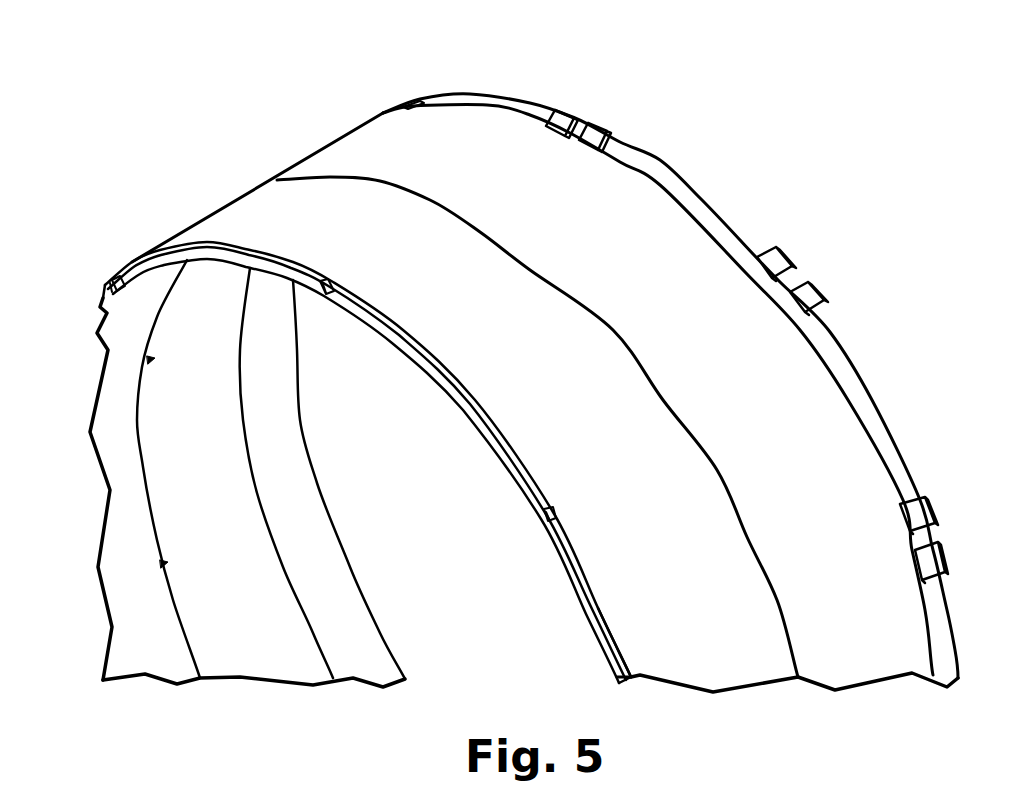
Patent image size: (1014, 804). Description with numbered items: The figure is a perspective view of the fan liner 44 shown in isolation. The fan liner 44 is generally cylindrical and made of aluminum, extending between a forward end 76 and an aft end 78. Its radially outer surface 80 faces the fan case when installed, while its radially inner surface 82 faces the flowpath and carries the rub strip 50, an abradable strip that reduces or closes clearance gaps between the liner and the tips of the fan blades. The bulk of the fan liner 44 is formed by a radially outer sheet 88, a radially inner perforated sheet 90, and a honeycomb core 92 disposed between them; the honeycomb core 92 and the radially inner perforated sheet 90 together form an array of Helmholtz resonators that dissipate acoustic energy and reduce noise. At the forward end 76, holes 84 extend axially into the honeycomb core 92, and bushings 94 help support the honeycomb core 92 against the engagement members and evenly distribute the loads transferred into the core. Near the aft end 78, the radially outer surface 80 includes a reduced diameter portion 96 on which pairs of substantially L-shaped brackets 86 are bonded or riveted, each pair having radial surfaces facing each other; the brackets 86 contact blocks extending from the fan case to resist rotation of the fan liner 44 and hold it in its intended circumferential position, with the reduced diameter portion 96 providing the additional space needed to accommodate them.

The fan liner 44 is at (513, 361).
The rub strip 50 is at (218, 502).
The forward end 76 is at (140, 264).
The aft end 78 is at (700, 186).
The radially outer surface 80 is at (252, 223).
The radially inner surface 82 is at (113, 437).
The holes 84 is at (108, 280).
The brackets 86 is at (403, 103).
The radially outer sheet 88 is at (485, 402).
The radially inner perforated sheet 90 is at (572, 577).
The honeycomb core 92 is at (607, 633).
The bushings 94 is at (106, 298).
The reduced diameter portion 96 is at (855, 385).